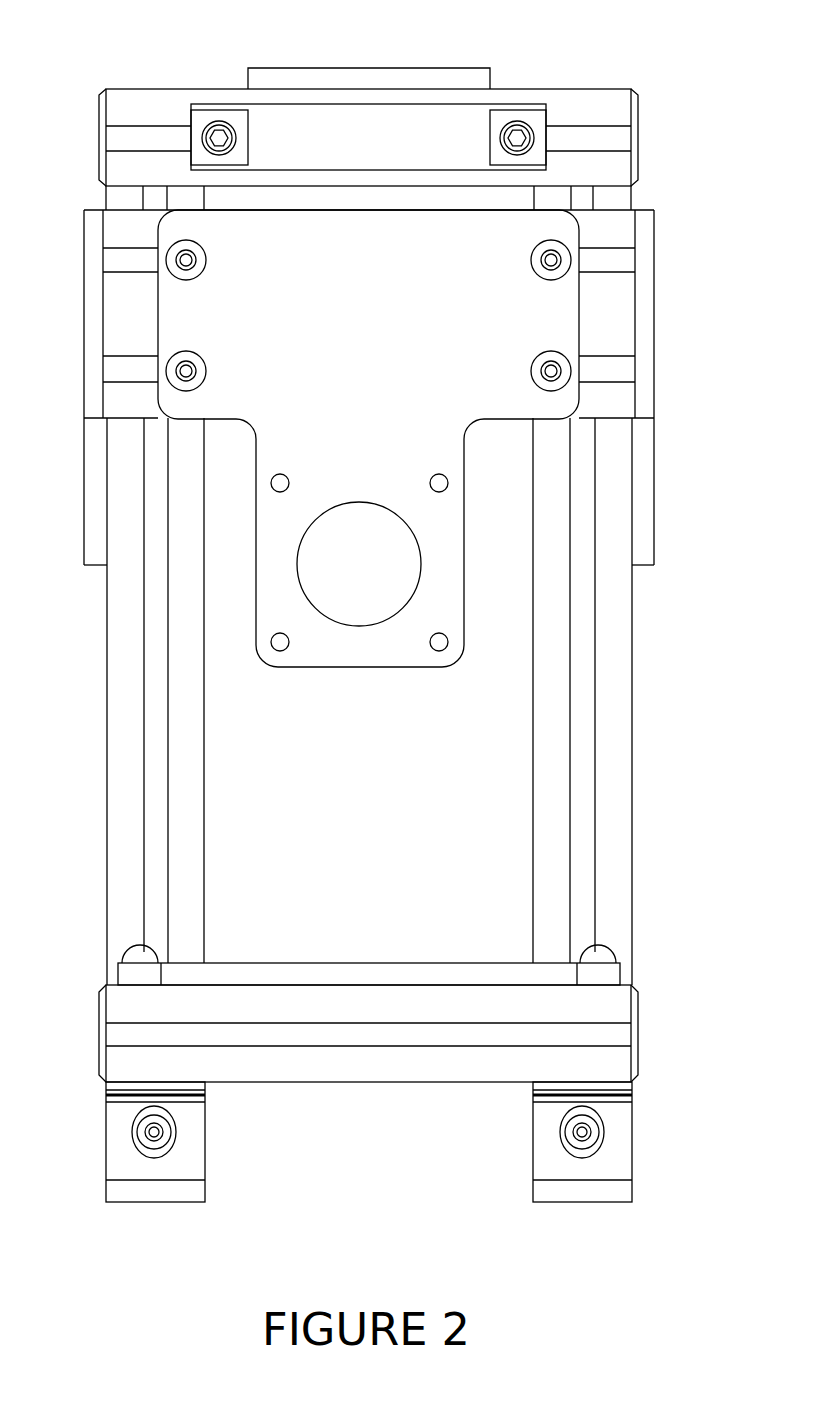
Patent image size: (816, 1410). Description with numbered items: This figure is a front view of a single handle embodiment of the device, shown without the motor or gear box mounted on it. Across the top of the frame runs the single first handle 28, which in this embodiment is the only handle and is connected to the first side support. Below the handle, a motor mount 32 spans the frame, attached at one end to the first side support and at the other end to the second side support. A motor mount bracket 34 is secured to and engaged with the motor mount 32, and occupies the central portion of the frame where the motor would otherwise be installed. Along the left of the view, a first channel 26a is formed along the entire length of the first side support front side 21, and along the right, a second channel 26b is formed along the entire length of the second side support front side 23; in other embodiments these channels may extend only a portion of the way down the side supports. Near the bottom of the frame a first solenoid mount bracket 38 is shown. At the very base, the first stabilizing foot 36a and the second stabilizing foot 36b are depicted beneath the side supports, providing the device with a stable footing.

The first side support front side 21 is at (122, 837).
The second side support front side 23 is at (617, 837).
The first channel 26a is at (136, 657).
The second channel 26b is at (602, 657).
The first handle 28 is at (377, 125).
The motor mount 32 is at (615, 318).
The motor mount bracket 34 is at (459, 382).
The first stabilizing foot 36a is at (162, 1193).
The second stabilizing foot 36b is at (570, 1193).
The first solenoid mount bracket 38 is at (290, 973).